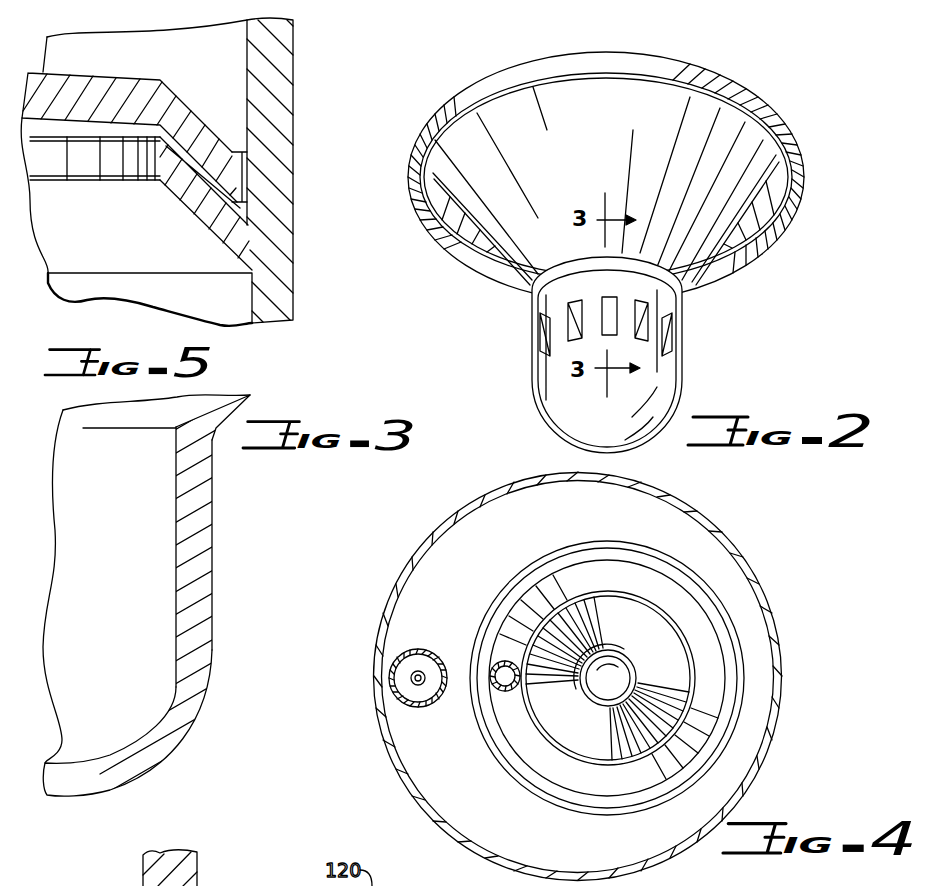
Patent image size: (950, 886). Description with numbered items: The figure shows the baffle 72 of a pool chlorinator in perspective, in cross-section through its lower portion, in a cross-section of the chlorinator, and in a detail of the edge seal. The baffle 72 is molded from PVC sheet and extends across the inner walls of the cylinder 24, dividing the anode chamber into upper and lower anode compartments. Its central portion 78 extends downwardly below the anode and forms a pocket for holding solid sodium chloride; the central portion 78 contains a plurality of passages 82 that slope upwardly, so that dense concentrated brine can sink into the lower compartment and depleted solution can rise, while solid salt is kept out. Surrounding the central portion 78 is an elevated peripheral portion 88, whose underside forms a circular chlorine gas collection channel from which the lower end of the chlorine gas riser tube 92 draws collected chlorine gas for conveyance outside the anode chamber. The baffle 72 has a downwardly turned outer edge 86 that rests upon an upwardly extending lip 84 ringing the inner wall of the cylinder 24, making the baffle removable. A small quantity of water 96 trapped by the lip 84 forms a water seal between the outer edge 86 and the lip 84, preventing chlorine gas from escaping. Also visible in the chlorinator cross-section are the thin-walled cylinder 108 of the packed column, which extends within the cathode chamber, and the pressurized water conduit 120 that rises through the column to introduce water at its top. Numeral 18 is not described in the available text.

In FIG. 4, the housing body 18 is at (723, 514).
In FIG. 5, the cylinder 24 is at (283, 86).
In FIG. 4, the cylinder 24 is at (597, 540).
In FIG. 5, the baffle 72 is at (82, 62).
In FIG. 3, the baffle 72 is at (218, 509).
In FIG. 2, the baffle 72 is at (740, 297).
In FIG. 4, the baffle 72 is at (718, 582).
In FIG. 3, the central portion 78 is at (163, 745).
In FIG. 2, the central portion 78 is at (532, 373).
In FIG. 4, the central portion 78 is at (633, 657).
In FIG. 3, the passages 82 is at (203, 540).
In FIG. 2, the passages 82 is at (542, 338).
In FIG. 5, the lip 84 is at (190, 196).
In FIG. 4, the lip 84 is at (662, 787).
In FIG. 5, the outer edge 86 is at (185, 112).
In FIG. 2, the outer edge 86 is at (805, 170).
In FIG. 4, the outer edge 86 is at (618, 797).
In FIG. 2, the peripheral portion 88 is at (497, 120).
In FIG. 4, the peripheral portion 88 is at (597, 747).
In FIG. 4, the chlorine gas riser tube 92 is at (519, 698).
In FIG. 5, the water 96 is at (232, 215).
In FIG. 4, the cylinder 108 is at (430, 647).
In FIG. 4, the water conduit 120 is at (432, 697).